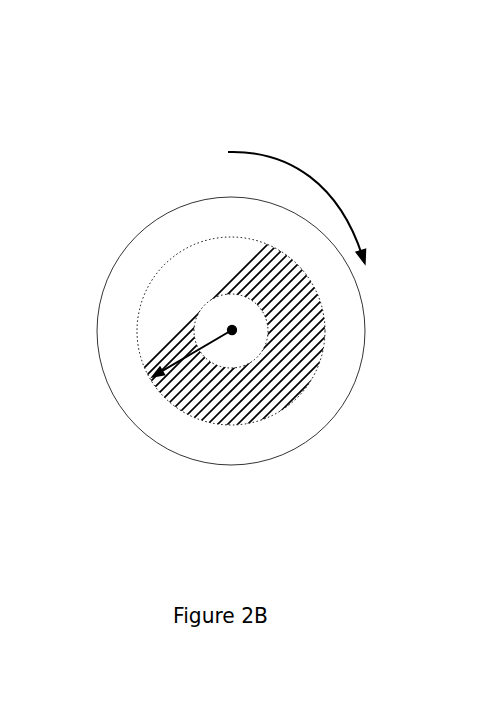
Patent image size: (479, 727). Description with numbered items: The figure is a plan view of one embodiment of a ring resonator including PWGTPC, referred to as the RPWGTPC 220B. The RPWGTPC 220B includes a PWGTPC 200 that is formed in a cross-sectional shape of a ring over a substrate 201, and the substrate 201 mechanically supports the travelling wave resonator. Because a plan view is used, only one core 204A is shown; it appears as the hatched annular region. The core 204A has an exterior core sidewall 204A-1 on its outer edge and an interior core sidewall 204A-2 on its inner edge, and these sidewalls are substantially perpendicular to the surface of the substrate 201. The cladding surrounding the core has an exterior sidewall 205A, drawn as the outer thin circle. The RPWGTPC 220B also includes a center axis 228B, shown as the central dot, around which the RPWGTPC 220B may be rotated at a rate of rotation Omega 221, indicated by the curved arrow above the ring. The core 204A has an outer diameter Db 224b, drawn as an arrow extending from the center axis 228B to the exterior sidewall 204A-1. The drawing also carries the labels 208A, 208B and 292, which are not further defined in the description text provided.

The ring resonator including PWGTPC 220B is at (275, 58).
The PWGTPC 200 is at (138, 330).
The substrate 201 is at (69, 355).
The core 204A is at (194, 283).
The exterior core sidewall 204A-1 is at (320, 360).
The interior core sidewall 204A-2 is at (227, 368).
The exterior sidewall of the cladding 205A is at (290, 452).
The outer edge of magnet region 208A is at (275, 424).
The radial line 208B is at (231, 293).
The rate of rotation 221 is at (327, 182).
The outer diameter Db 224b is at (170, 367).
The center axis 228B is at (236, 340).
The gap region 292 is at (352, 323).
The outer diameter Db is at (172, 397).